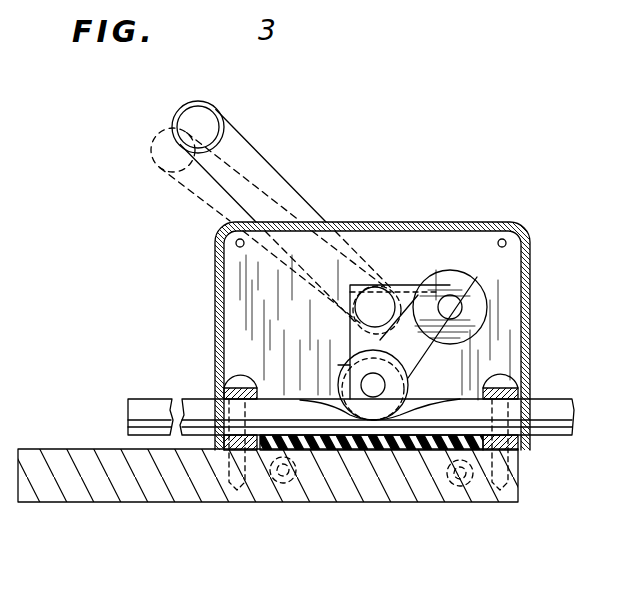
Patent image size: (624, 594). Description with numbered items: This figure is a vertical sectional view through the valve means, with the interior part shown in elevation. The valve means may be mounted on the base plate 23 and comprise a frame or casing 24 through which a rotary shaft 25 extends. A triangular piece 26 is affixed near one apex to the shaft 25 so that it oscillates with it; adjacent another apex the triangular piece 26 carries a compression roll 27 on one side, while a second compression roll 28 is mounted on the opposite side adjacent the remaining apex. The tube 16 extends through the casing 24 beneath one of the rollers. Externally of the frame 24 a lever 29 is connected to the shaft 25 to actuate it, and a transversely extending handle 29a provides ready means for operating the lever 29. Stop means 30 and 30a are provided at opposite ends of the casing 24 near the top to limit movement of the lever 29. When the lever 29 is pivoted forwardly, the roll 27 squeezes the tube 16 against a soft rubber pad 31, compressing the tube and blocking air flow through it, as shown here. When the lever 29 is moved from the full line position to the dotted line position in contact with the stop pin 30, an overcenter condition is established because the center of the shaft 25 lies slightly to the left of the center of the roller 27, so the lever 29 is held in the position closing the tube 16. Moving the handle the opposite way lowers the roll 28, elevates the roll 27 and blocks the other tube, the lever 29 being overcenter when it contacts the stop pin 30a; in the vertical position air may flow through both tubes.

The tube 16 is at (152, 405).
The base plate 23 is at (83, 490).
The frame or casing 24 is at (415, 242).
The rotary shaft 25 is at (372, 302).
The triangular piece 26 is at (412, 282).
The compression roll 27 is at (346, 366).
The compression roll 28 is at (470, 289).
The lever 29 is at (266, 172).
The handle 29a is at (208, 123).
The stop pin 30 is at (236, 243).
The stop pin 30a is at (506, 243).
The soft rubber pad 31 is at (352, 452).